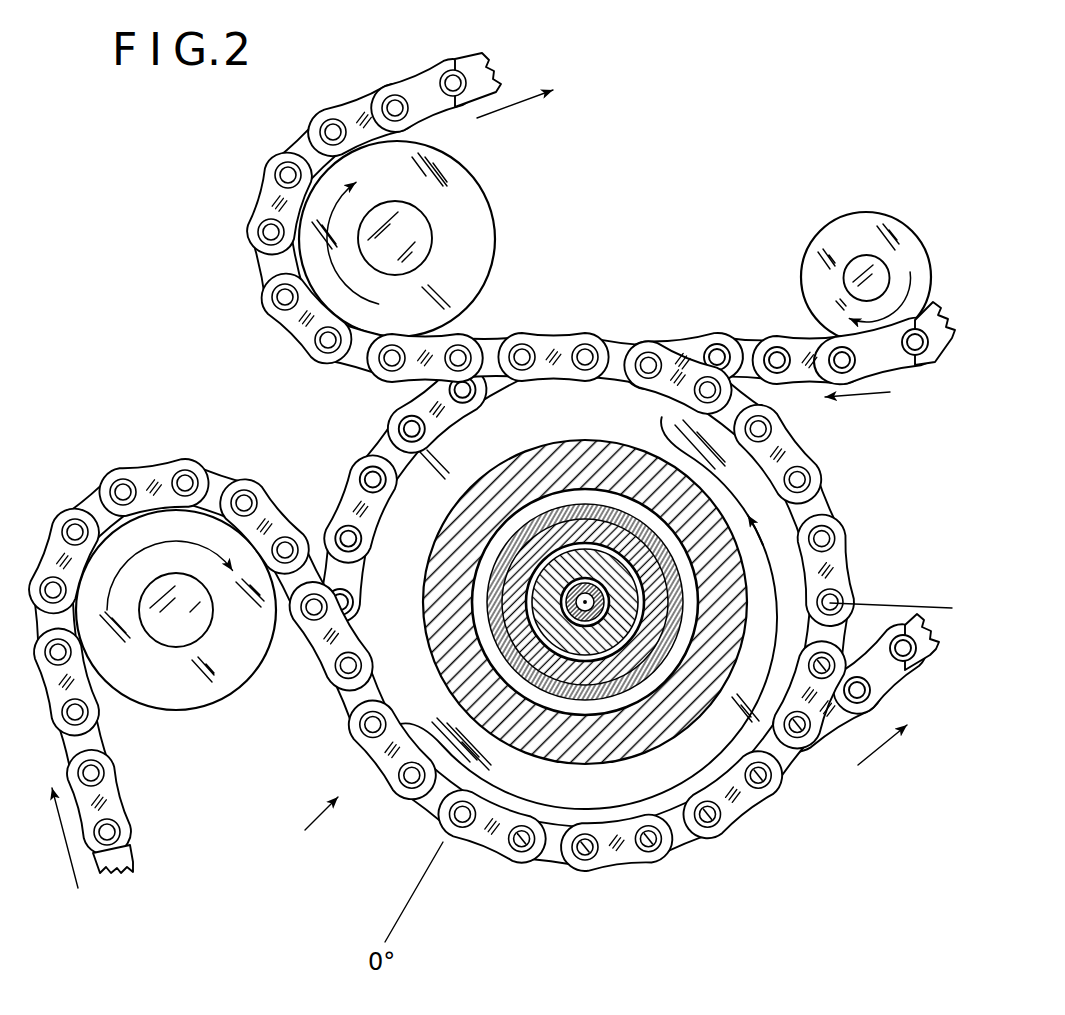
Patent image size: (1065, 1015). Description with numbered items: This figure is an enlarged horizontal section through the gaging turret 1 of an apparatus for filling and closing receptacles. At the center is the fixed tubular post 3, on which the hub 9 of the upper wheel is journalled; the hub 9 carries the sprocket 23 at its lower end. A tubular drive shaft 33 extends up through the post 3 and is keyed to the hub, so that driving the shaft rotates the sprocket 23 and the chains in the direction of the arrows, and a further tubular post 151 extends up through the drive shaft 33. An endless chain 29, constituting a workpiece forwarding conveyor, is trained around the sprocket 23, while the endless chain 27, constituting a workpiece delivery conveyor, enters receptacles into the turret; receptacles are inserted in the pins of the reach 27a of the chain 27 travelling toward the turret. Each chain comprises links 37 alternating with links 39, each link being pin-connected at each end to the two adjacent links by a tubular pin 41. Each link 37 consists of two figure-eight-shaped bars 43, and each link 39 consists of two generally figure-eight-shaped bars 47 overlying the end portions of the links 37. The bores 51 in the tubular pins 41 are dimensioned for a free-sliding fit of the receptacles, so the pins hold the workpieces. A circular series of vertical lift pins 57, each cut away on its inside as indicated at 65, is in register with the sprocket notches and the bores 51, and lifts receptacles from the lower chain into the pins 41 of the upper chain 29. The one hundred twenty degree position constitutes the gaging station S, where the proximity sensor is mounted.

The gaging turret 1 is at (312, 824).
The fixed tubular post 3 is at (527, 642).
The hub 9 is at (426, 554).
The sprocket 23 is at (758, 482).
The endless chain 27 is at (684, 334).
The reach 27a is at (950, 330).
The endless chain 29 is at (417, 75).
The tubular drive shaft 33 is at (557, 640).
The links 37 is at (255, 271).
The links 39 is at (256, 195).
The tubular pin 41 is at (325, 123).
The figure-eight-shaped bars 43 is at (677, 840).
The figure-eight-shaped bars 47 is at (735, 810).
The bores 51 is at (759, 779).
The lift pins 57 is at (708, 816).
The cut away 65 is at (710, 804).
The tubular post 151 is at (592, 620).
The gaging station S is at (901, 610).